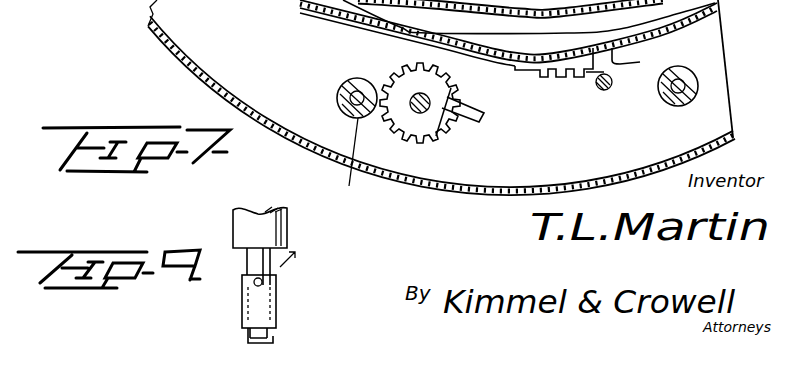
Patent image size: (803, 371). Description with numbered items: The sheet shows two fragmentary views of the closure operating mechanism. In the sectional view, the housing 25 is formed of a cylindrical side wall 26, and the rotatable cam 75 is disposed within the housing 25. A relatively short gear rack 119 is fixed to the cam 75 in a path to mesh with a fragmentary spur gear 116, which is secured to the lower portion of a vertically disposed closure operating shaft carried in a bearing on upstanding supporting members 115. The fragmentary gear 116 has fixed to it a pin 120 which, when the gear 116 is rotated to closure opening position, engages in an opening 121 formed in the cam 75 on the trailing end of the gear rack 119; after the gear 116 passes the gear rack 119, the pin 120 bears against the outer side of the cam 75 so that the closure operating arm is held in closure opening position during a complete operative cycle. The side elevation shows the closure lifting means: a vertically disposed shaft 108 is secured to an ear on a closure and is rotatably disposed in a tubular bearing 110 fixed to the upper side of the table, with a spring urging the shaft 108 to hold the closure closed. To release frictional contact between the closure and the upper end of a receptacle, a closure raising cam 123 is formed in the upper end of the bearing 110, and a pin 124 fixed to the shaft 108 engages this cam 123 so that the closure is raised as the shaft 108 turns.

In FIG. 7, the housing 25 is at (306, 157).
In FIG. 7, the cylindrical side wall 26 is at (237, 100).
In FIG. 7, the rotatable cam 75 is at (363, 23).
In FIG. 7, the upstanding supporting members 115 is at (742, 80).
In FIG. 7, the fragmentary spur gear 116 is at (436, 133).
In FIG. 7, the gear rack 119 is at (566, 82).
In FIG. 7, the pin 120 is at (476, 110).
In FIG. 7, the opening 121 is at (648, 61).
In FIG. 9, the shaft 108 is at (270, 329).
In FIG. 9, the tubular bearing 110 is at (248, 310).
In FIG. 9, the closure raising cam 123 is at (276, 292).
In FIG. 9, the pin 124 is at (242, 273).